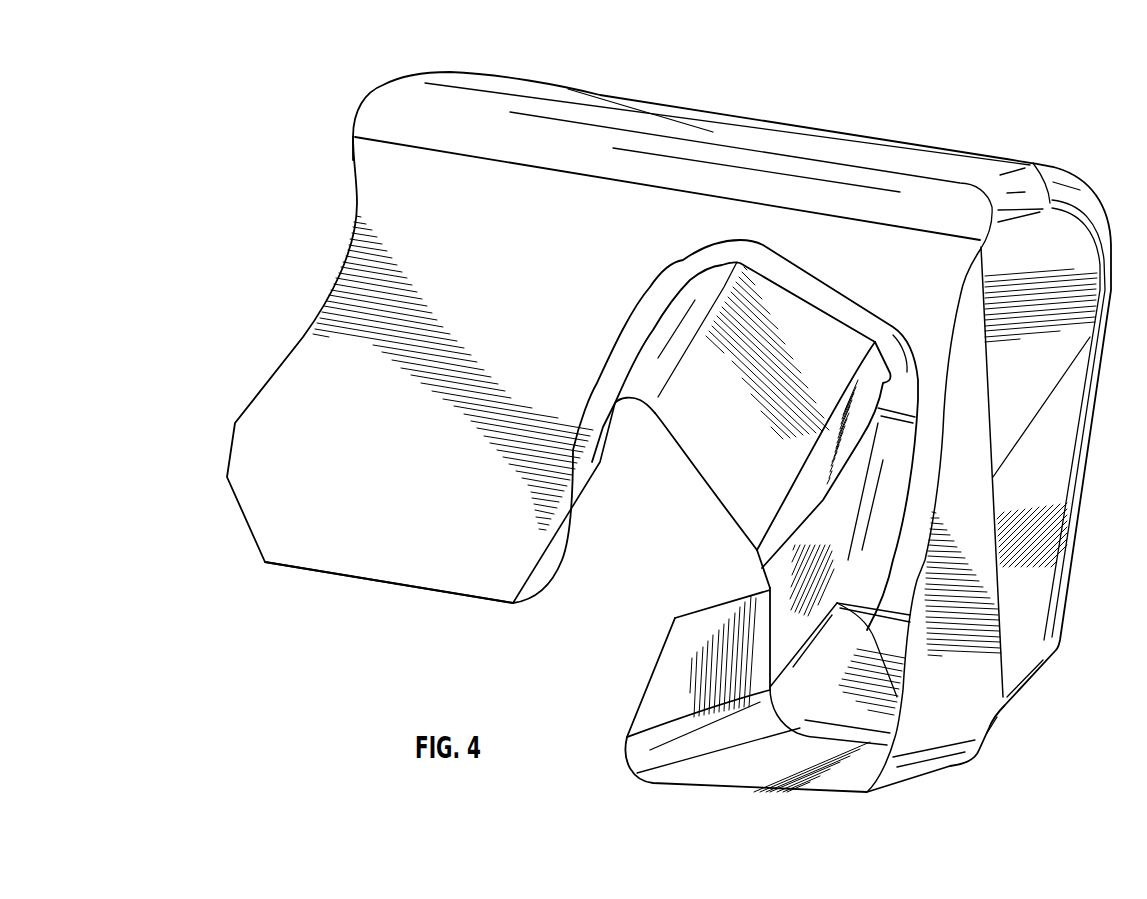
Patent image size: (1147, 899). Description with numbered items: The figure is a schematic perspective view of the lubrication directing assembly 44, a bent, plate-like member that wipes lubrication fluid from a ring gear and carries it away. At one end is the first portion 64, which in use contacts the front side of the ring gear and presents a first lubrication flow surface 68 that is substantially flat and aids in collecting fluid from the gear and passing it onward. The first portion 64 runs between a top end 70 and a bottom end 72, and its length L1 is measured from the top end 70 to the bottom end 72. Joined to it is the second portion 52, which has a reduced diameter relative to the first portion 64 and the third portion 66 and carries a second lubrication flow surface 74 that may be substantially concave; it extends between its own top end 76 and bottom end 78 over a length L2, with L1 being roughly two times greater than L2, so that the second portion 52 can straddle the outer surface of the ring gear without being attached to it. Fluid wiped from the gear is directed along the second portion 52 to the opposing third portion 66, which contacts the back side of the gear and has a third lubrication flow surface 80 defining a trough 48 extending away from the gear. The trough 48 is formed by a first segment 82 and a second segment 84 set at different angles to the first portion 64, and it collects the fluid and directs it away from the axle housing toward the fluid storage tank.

The lubrication directing assembly 44 is at (806, 66).
The trough 48 is at (728, 778).
The second portion 52 is at (709, 475).
The first portion 64 is at (303, 338).
The third portion 66 is at (631, 776).
The first lubrication flow surface 68 is at (268, 492).
The top end 70 is at (430, 150).
The bottom end 72 is at (332, 567).
The second lubrication flow surface 74 is at (740, 497).
The top end 76 is at (810, 285).
The bottom end 78 is at (658, 428).
The third lubrication flow surface 80 is at (673, 662).
The first segment 82 is at (803, 627).
The second segment 84 is at (650, 703).
The length of first portion L1 is at (364, 582).
The length of second portion L2 is at (652, 425).